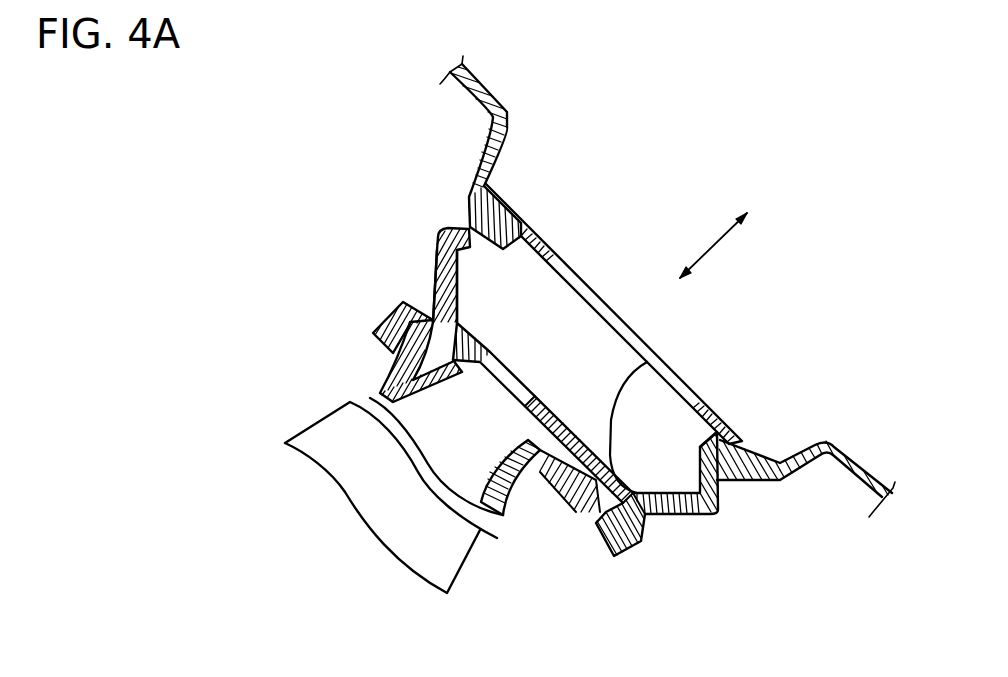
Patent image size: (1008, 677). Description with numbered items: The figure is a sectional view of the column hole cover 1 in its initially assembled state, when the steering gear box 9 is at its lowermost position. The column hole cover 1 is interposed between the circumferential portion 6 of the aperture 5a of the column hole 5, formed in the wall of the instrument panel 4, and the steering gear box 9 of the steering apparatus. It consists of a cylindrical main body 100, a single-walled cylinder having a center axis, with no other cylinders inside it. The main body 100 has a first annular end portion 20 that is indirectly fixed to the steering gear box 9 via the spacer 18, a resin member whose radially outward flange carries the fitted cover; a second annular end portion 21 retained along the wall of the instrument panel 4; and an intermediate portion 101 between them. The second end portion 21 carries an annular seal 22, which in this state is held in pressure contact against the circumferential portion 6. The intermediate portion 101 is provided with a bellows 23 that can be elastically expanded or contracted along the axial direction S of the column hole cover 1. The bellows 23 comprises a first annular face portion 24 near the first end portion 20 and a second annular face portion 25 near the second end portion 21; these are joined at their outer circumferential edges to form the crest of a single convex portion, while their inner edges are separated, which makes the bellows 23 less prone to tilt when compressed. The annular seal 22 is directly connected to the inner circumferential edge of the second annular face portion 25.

The column hole cover 1 is at (520, 387).
The instrument panel 4 is at (485, 178).
The column hole 5 is at (545, 240).
The aperture 5a is at (594, 521).
The circumferential portion 6 is at (740, 472).
The steering gear box 9 is at (313, 428).
The spacer 18 is at (400, 383).
The first annular end portion 20 is at (393, 323).
The second annular end portion 21 is at (470, 228).
The annular seal 22 is at (735, 437).
The bellows 23 is at (438, 290).
The first annular face portion 24 is at (677, 514).
The second annular face portion 25 is at (708, 486).
The cylindrical main body 100 is at (693, 522).
The intermediate portion 101 is at (440, 263).
The axial direction S is at (717, 247).